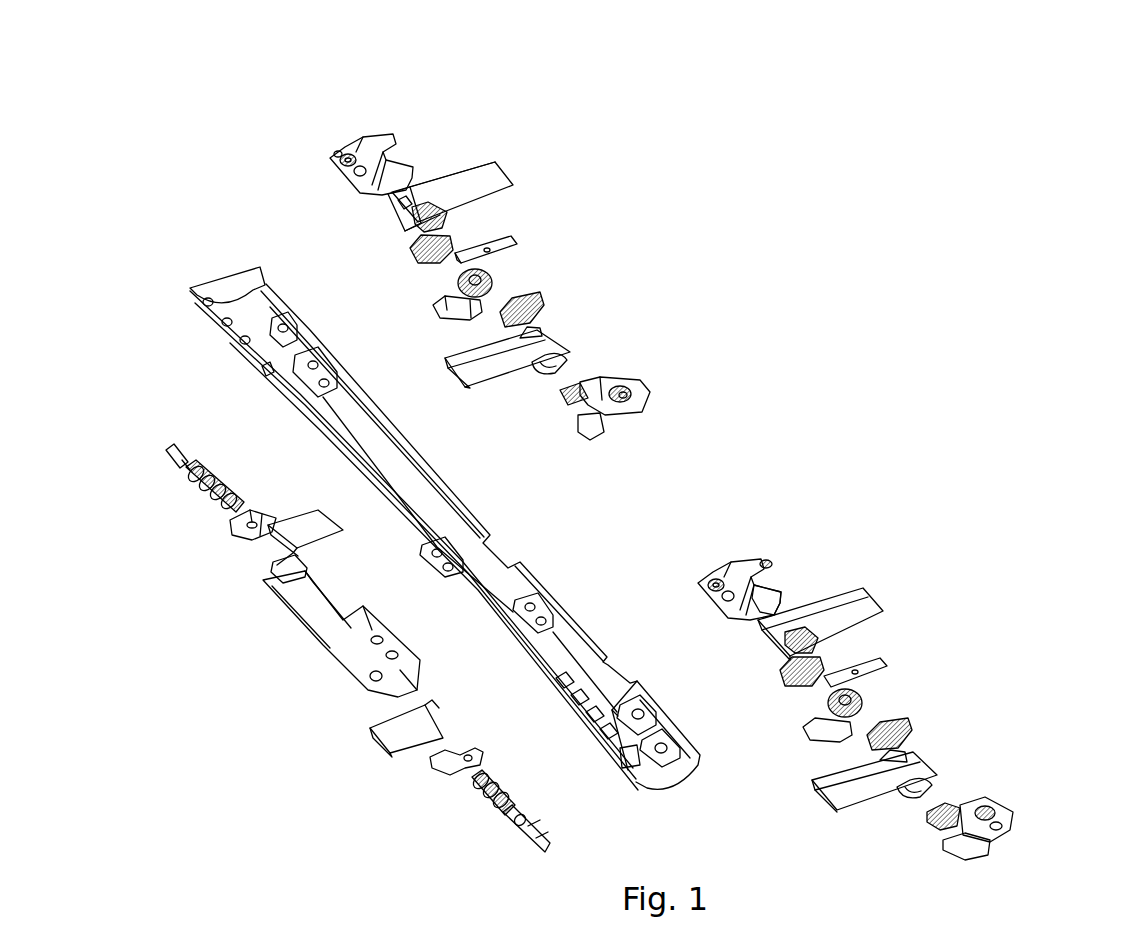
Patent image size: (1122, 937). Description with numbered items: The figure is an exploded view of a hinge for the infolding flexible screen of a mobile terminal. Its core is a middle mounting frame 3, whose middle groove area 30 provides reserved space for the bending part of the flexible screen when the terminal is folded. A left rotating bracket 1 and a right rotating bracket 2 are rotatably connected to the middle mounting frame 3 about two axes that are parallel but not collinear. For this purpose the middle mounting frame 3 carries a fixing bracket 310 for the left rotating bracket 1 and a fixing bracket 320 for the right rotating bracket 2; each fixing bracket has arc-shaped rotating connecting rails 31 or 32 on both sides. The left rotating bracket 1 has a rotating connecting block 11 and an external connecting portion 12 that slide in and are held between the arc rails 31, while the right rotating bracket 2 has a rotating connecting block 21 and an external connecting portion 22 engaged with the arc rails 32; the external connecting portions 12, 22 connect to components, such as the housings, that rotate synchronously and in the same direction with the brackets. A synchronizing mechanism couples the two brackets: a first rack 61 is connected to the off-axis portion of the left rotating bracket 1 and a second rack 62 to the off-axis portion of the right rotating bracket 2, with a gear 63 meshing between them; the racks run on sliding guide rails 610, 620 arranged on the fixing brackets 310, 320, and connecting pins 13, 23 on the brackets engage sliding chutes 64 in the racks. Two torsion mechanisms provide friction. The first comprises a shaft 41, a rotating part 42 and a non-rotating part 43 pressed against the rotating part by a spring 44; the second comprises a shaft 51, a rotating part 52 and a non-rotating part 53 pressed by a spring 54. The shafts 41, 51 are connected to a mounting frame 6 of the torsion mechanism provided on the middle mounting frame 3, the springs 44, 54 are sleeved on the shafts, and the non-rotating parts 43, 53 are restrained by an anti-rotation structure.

The left rotating bracket 1 is at (912, 766).
The right rotating bracket 2 is at (862, 605).
The middle mounting frame 3 is at (208, 278).
The mounting frame of the torsion mechanism 6 is at (303, 630).
The rotating connecting block 11 is at (565, 366).
The external connecting portion 12 is at (493, 355).
The connecting pin 13 is at (535, 328).
The rotating connecting block 21 is at (432, 218).
The external connecting portion 22 is at (502, 170).
The connecting pin 23 is at (403, 220).
The middle groove area 30 is at (745, 568).
The arc-shaped rotating connecting rail 31 is at (605, 412).
The arc-shaped rotating connecting rail 32 is at (405, 140).
The shaft 41 is at (527, 842).
The rotating part 42 is at (403, 712).
The non-rotating part 43 is at (430, 760).
The spring 44 is at (480, 803).
The shaft 51 is at (173, 463).
The rotating part 52 is at (290, 540).
The non-rotating part 53 is at (233, 533).
The spring 54 is at (197, 493).
The first rack 61 is at (482, 310).
The second rack 62 is at (412, 247).
The gear 63 is at (492, 280).
The sliding chute 64 is at (544, 311).
The fixing bracket 310 is at (643, 405).
The fixing bracket 320 is at (337, 153).
The sliding guide rail 610 is at (928, 812).
The sliding guide rail 620 is at (403, 199).